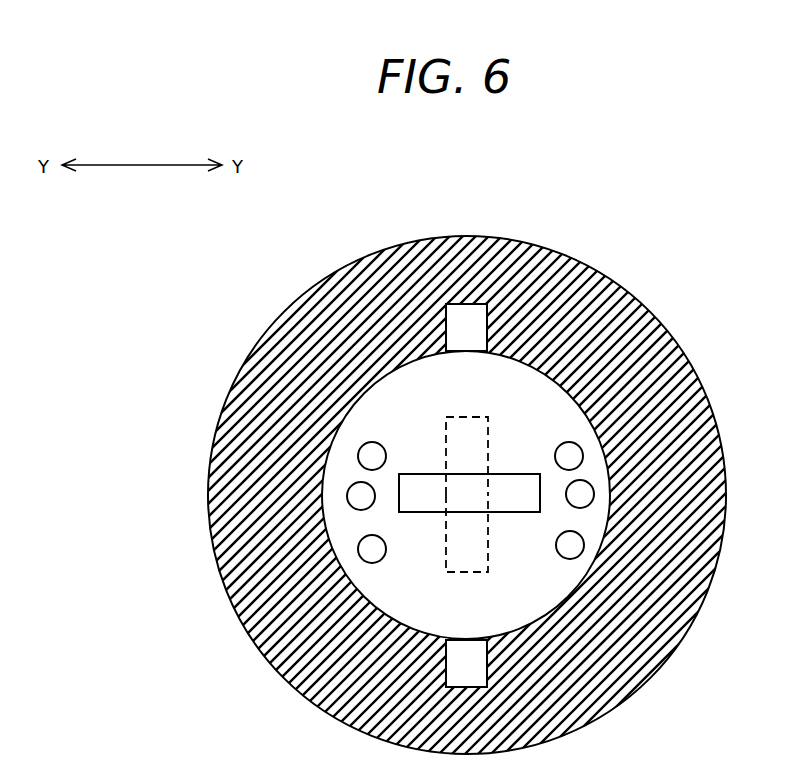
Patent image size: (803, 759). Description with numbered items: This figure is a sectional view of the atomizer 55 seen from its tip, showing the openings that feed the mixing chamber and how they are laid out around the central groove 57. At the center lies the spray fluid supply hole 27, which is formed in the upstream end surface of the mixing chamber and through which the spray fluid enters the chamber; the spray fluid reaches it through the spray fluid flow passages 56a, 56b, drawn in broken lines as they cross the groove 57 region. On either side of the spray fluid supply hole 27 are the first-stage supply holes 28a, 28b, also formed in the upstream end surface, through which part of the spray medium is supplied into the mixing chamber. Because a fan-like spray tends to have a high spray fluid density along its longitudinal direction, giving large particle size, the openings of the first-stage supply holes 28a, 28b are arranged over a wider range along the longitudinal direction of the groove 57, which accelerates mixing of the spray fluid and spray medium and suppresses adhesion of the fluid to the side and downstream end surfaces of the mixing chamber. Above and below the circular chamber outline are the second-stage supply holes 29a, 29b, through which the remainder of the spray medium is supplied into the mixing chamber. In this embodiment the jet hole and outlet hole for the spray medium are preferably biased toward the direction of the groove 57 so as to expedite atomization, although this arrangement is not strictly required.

The atomizer 55 is at (260, 368).
The spray fluid supply hole 27 is at (466, 495).
The first-stage supply hole 28a is at (377, 453).
The first-stage supply hole 28b is at (373, 553).
The second-stage supply hole 29a is at (470, 342).
The second-stage supply hole 29b is at (462, 650).
The spray fluid flow passage 56a is at (469, 443).
The spray fluid flow passage 56b is at (484, 562).
The groove 57 is at (516, 513).